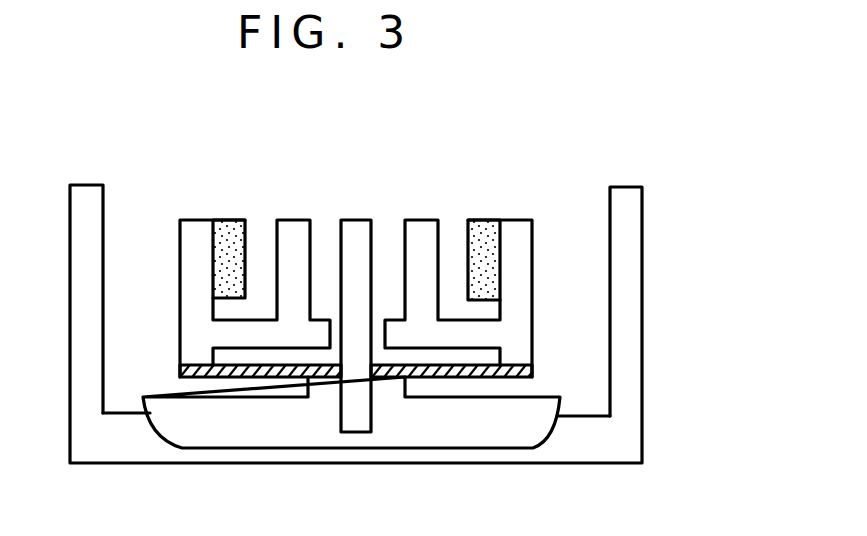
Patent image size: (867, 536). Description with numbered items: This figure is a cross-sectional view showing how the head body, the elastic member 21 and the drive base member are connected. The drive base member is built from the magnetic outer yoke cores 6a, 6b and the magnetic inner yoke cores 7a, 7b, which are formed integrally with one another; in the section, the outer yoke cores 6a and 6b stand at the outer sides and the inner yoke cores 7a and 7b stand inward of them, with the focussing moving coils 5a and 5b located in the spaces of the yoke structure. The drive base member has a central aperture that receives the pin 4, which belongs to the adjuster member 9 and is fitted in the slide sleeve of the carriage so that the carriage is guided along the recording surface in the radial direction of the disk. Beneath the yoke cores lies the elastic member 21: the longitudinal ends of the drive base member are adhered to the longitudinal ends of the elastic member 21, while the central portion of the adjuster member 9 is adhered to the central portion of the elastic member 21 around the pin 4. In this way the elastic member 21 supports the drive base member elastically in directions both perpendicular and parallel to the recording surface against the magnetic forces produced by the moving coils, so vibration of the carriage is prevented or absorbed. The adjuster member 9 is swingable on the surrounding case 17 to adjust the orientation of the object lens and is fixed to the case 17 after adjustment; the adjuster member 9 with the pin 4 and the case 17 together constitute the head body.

The pin 4 is at (360, 232).
The focussing moving coil 5a is at (483, 237).
The focussing moving coil 5b is at (228, 232).
The magnetic outer yoke core 6a is at (525, 247).
The magnetic outer yoke core 6b is at (190, 236).
The magnetic inner yoke core 7a is at (425, 230).
The magnetic inner yoke core 7b is at (295, 230).
The adjuster member 9 is at (448, 432).
The case 17 is at (636, 268).
The elastic member 21 is at (180, 372).